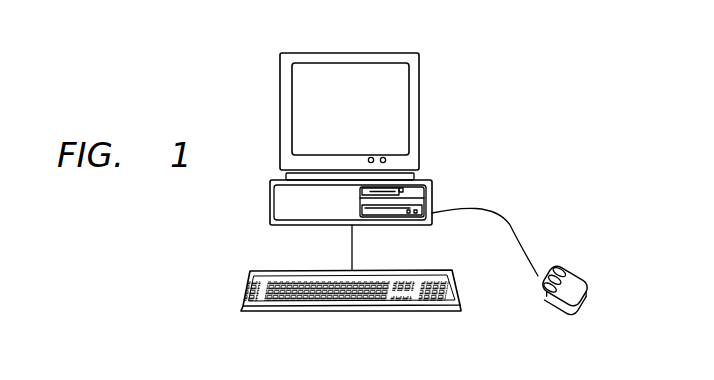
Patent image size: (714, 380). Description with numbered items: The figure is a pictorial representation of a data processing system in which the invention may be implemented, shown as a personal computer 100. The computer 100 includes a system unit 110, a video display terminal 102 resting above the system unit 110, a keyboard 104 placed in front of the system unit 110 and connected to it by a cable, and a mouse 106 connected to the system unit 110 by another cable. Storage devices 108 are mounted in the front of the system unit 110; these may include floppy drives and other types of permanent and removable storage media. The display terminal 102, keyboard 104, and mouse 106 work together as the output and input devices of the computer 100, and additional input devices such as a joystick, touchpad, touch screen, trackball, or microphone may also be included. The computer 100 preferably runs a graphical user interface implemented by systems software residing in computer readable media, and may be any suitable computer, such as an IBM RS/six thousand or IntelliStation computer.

The computer 100 is at (458, 138).
The video display terminal 102 is at (280, 112).
The keyboard 104 is at (240, 290).
The mouse 106 is at (548, 293).
The storage devices 108 is at (433, 210).
The system unit 110 is at (270, 200).